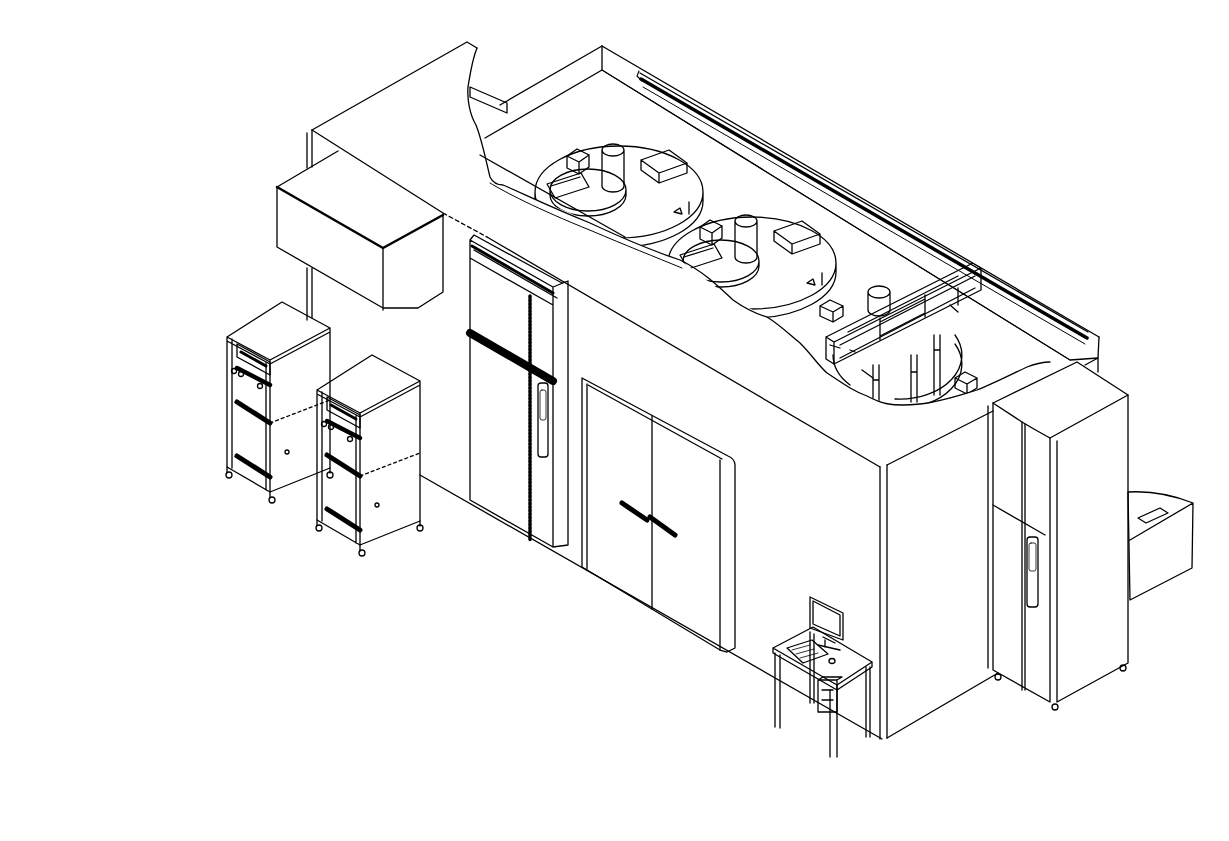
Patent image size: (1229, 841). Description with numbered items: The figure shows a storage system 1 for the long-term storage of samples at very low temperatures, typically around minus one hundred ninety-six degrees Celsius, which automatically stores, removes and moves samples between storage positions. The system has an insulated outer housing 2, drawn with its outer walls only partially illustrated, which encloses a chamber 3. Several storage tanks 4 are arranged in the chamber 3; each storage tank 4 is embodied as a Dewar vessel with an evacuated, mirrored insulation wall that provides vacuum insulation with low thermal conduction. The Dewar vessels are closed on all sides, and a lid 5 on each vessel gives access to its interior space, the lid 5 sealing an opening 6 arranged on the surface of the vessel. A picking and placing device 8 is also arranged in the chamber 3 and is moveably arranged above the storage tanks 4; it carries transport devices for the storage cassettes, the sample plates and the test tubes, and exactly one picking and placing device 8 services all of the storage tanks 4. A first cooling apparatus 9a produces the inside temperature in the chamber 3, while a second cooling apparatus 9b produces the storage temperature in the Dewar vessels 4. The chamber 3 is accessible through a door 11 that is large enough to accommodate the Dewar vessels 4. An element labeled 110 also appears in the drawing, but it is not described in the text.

The storage system 1 is at (868, 130).
The insulated outer housing 2 is at (384, 86).
The chamber 3 is at (613, 102).
The storage tank 4 is at (695, 182).
The lid 5 is at (598, 180).
The opening 6 is at (767, 247).
The picking and placing device 8 is at (967, 242).
The first cooling apparatus 9a is at (292, 185).
The second cooling apparatus 9b is at (262, 323).
The door 11 is at (673, 598).
The output unit 110 is at (1122, 510).